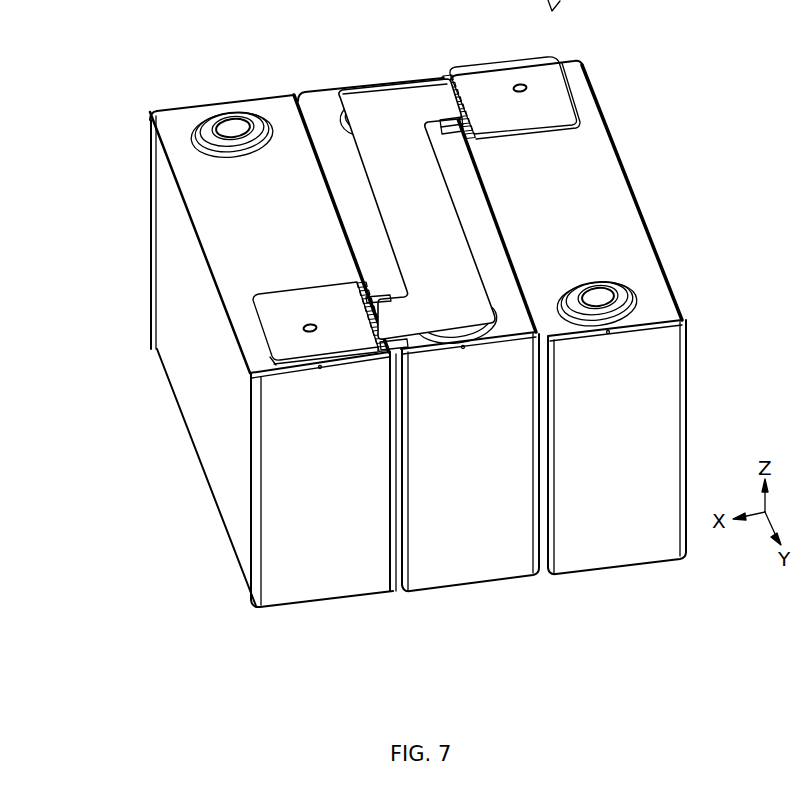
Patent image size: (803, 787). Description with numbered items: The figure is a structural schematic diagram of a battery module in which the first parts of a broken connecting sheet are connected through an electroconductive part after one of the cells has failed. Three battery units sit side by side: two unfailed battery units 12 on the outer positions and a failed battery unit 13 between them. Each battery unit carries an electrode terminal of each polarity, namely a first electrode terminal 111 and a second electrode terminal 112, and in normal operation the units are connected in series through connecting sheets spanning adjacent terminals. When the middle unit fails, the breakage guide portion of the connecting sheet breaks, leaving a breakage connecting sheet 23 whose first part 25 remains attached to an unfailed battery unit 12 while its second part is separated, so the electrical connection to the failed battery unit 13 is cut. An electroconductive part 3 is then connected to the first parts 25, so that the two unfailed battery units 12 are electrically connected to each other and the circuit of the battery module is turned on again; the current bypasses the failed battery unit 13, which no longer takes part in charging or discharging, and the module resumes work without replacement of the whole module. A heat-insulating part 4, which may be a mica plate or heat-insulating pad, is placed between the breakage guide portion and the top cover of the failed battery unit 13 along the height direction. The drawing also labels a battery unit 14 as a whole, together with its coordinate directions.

The electroconductive part 3 is at (347, 97).
The heat-insulating part 4 is at (443, 78).
The unfailed battery unit 12 is at (327, 590).
The failed battery unit 13 is at (468, 573).
The battery cell 14 is at (444, 389).
The breakage connecting sheet 23 is at (316, 267).
The first part 25 is at (270, 327).
The first electrode terminal 111 is at (597, 298).
The second electrode terminal 112 is at (232, 128).